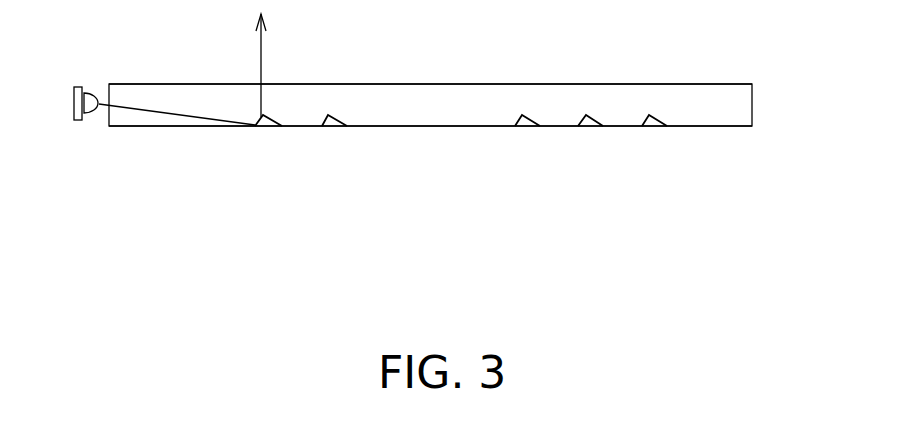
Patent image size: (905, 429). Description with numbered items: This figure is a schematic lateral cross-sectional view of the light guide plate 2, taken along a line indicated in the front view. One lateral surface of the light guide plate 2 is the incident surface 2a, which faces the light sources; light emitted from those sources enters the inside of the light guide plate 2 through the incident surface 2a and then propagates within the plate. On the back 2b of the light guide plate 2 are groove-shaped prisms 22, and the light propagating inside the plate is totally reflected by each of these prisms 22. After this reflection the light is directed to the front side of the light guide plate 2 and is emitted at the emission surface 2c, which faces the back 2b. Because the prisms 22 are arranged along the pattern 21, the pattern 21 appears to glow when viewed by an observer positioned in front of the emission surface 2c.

The light guide plate 2 is at (721, 236).
The incident surface 2a is at (105, 118).
The back 2b is at (740, 127).
The emission surface 2c is at (737, 84).
The pattern 21 is at (678, 207).
The groove-shaped prism 22 is at (268, 127).